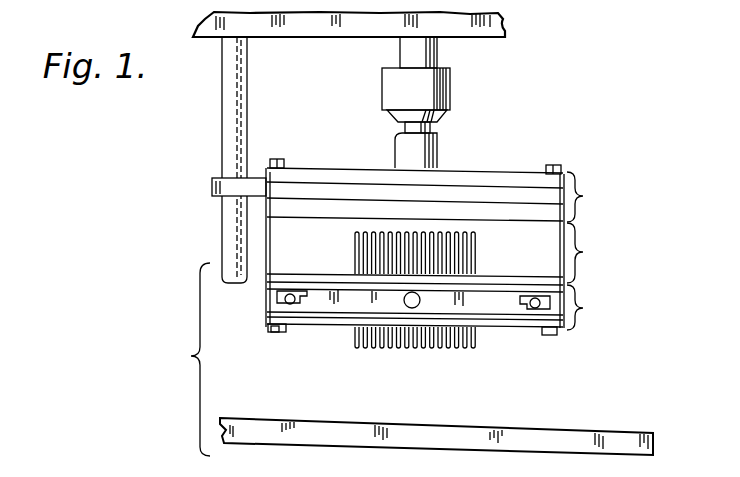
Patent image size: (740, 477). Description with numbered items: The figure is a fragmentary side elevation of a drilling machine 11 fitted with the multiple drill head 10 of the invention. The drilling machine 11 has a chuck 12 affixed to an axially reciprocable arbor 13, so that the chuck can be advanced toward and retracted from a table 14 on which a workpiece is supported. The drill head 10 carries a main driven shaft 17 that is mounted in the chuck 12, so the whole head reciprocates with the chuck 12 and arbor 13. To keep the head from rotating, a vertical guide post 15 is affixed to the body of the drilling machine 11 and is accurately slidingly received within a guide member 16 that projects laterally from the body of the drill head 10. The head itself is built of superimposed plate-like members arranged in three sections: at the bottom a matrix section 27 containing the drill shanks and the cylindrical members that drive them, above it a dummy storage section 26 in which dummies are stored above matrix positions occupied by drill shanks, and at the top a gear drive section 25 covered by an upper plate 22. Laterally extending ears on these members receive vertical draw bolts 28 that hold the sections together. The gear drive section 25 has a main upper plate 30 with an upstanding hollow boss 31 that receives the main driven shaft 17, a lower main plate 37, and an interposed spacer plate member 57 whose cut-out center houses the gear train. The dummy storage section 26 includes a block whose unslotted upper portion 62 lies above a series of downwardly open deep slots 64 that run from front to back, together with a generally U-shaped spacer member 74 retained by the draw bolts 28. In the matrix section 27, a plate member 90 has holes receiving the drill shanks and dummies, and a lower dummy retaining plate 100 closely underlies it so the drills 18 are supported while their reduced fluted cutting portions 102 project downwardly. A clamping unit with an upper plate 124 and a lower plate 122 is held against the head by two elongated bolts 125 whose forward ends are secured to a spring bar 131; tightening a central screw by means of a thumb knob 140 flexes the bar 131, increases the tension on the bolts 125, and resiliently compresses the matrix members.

The multiple drill head 10 is at (262, 312).
The drilling machine 11 is at (471, 54).
The chuck 12 is at (382, 88).
The arbor 13 is at (405, 52).
The table 14 is at (400, 425).
The vertical guide post 15 is at (243, 92).
The guide member 16 is at (212, 186).
The main driven shaft 17 is at (405, 127).
The drills 18 is at (351, 338).
The upper plate 22 is at (330, 167).
The gear drive section 25 is at (593, 197).
The dummy storage section 26 is at (592, 253).
The matrix section 27 is at (589, 307).
The draw bolts 28 is at (278, 159).
The main upper plate 30 is at (362, 170).
The upstanding hollow boss 31 is at (437, 142).
The lower main plate 37 is at (486, 212).
The spacer plate member 57 is at (453, 192).
The unslotted upper portion 62 is at (292, 248).
The slots 64 is at (463, 248).
The spacer member 74 is at (338, 273).
The plate member 90 is at (511, 318).
The lower dummy retaining plate 100 is at (291, 330).
The fluted cutting portion 102 is at (375, 341).
The lower plate 122 is at (538, 323).
The upper plate 124 is at (500, 285).
The elongated bolts 125 is at (292, 295).
The spring bar 131 is at (273, 290).
The thumb knob 140 is at (404, 300).